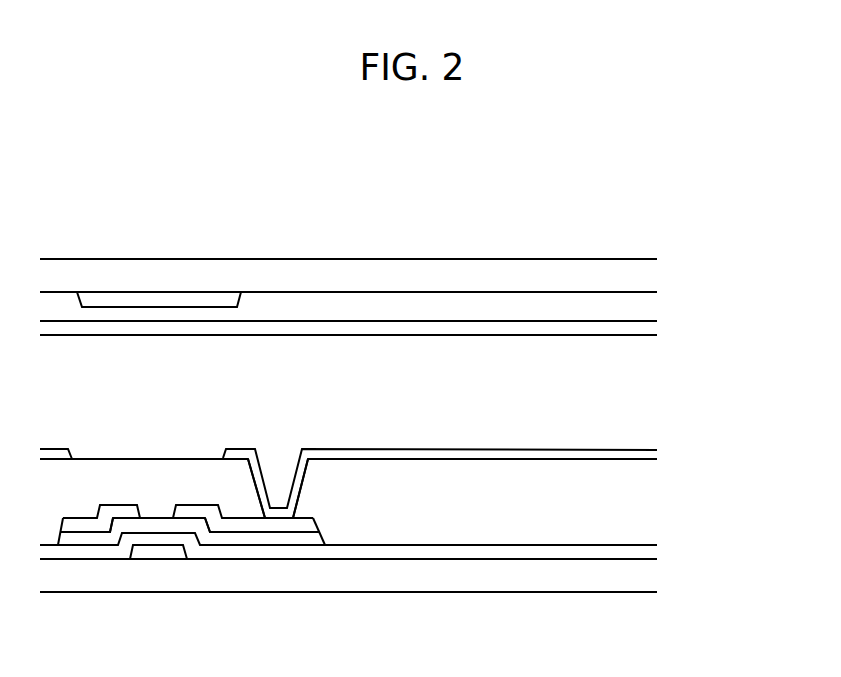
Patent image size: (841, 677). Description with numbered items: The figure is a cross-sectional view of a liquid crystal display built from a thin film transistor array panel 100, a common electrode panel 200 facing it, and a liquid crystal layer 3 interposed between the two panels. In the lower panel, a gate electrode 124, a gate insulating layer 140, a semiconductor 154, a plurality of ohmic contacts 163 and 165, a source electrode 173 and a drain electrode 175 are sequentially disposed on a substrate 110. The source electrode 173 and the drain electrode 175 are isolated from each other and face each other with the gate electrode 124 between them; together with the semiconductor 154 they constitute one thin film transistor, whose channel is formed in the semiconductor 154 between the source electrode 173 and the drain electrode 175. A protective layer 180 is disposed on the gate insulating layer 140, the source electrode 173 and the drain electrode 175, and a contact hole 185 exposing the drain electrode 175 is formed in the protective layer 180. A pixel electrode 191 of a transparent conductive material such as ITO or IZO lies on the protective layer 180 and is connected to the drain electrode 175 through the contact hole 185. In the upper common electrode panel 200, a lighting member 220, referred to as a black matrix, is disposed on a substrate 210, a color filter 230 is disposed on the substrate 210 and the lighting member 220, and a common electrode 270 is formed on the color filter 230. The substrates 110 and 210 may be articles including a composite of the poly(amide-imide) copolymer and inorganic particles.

The liquid crystal layer 3 is at (632, 398).
The thin film transistor array panel 100 is at (412, 514).
The substrate 110 is at (647, 575).
The gate electrode 124 is at (155, 552).
The gate insulating layer 140 is at (647, 553).
The semiconductor 154 is at (212, 542).
The ohmic contact 163 is at (85, 533).
The ohmic contact 165 is at (263, 533).
The source electrode 173 is at (128, 510).
The drain electrode 175 is at (305, 520).
The protective layer 180 is at (635, 497).
The contact hole 185 is at (305, 473).
The pixel electrode 191 is at (55, 452).
The common electrode panel 200 is at (412, 281).
The substrate 210 is at (645, 277).
The lighting member 220 is at (157, 300).
The color filter 230 is at (645, 308).
The common electrode 270 is at (384, 345).